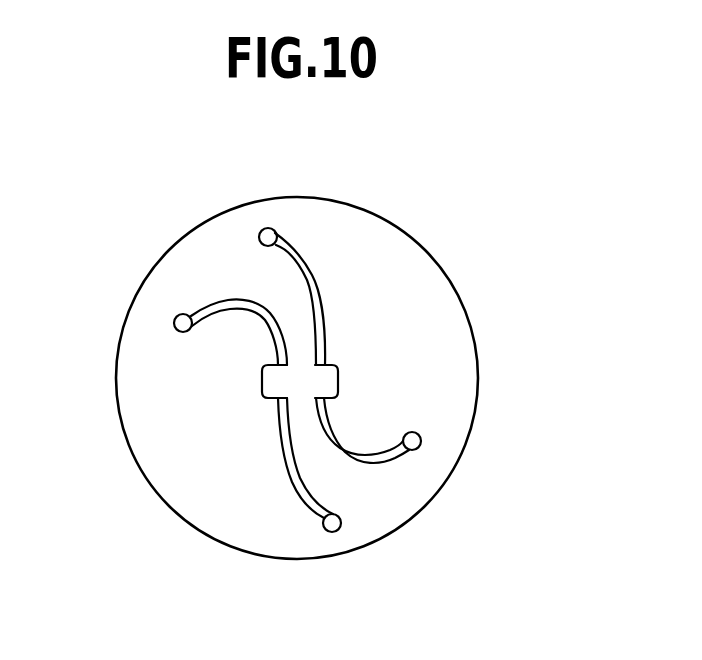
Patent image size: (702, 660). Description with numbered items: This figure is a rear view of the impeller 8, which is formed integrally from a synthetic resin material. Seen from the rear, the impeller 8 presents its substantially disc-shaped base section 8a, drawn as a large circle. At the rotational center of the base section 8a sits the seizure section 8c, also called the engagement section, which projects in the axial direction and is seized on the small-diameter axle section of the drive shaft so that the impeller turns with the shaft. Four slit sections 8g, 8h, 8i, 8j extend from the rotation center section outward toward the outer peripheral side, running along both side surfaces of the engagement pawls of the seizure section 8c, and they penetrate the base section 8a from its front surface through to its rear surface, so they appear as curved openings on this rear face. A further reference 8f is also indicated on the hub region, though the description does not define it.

The impeller 8 is at (395, 204).
The base section 8a is at (433, 305).
The seizure section 8c is at (357, 372).
The hub portion 8f is at (277, 380).
The slit section 8g is at (274, 233).
The slit section 8h is at (415, 440).
The slit section 8i is at (333, 527).
The slit section 8j is at (177, 317).